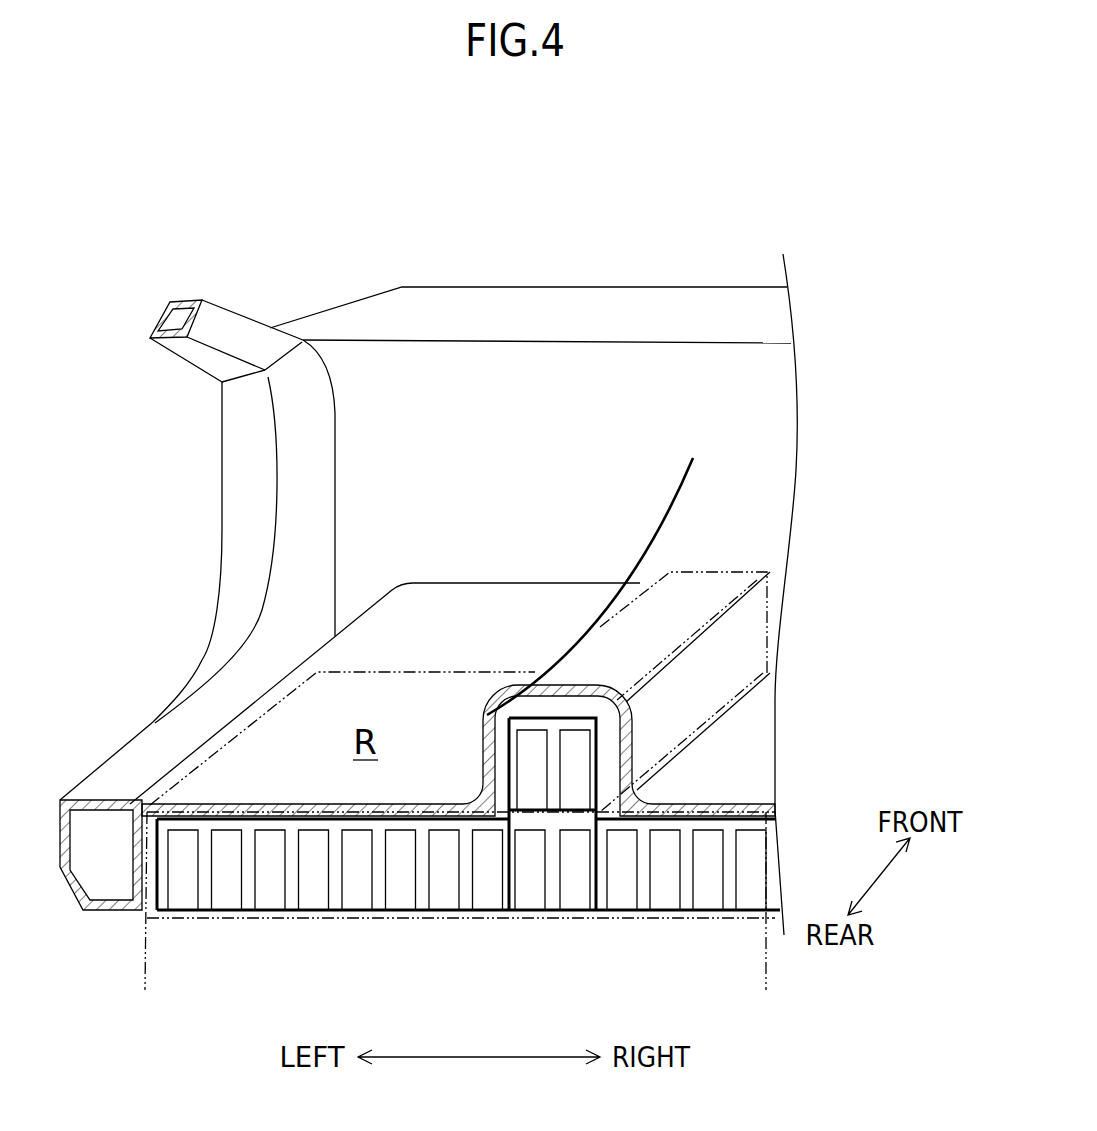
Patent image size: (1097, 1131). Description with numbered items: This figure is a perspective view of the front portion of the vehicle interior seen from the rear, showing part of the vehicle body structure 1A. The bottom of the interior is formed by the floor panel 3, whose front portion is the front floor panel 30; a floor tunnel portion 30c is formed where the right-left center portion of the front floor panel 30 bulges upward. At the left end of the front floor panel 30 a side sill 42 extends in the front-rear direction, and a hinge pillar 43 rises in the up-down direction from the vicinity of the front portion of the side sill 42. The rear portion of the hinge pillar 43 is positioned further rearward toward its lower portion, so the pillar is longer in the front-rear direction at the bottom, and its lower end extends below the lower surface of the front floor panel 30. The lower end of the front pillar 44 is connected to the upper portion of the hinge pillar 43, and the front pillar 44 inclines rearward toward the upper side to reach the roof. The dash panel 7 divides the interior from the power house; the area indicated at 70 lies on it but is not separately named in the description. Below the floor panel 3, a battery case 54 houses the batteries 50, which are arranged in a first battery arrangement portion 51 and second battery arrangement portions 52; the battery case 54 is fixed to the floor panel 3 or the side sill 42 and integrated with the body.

The vehicle body structure 1A is at (770, 514).
The floor panel 3 is at (574, 615).
The dash panel 7 is at (430, 377).
The roof side rail surface 70 is at (647, 364).
The front floor panel 30 is at (547, 645).
The floor tunnel portion 30c is at (710, 635).
The side sill 42 is at (153, 722).
The hinge pillar 43 is at (222, 455).
The front pillar 44 is at (227, 302).
The battery 50 is at (597, 767).
The first battery arrangement portion 51 is at (600, 787).
The second battery arrangement portions 52 is at (444, 922).
The battery case 54 is at (207, 927).